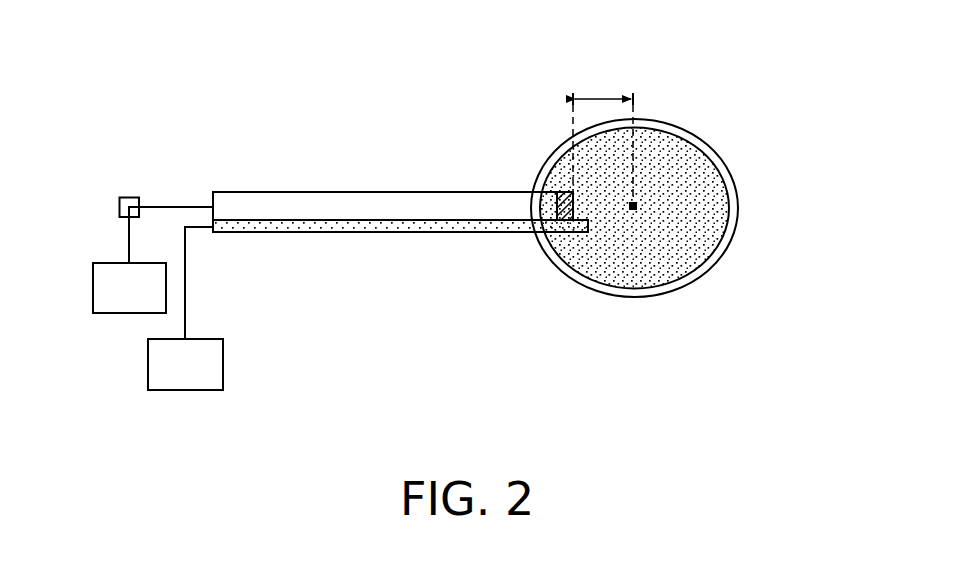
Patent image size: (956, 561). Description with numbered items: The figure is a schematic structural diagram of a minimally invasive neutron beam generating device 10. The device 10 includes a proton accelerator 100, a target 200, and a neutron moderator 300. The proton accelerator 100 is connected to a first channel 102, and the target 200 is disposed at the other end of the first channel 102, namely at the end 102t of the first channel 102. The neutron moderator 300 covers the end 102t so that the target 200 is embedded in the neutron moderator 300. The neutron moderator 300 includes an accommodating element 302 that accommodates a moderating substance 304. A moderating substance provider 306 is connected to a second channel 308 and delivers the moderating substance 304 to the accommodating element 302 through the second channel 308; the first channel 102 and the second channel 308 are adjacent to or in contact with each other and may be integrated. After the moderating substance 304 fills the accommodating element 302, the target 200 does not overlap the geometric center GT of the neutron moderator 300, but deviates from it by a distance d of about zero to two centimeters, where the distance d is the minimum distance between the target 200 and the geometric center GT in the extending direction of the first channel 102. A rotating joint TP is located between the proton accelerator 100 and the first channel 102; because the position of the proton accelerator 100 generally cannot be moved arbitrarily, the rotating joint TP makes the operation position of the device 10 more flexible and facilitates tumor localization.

The minimally invasive neutron beam generating device 10 is at (60, 29).
The rotating joint TP is at (122, 196).
The proton accelerator 100 is at (150, 302).
The first channel 102 is at (393, 203).
The end of the first channel 102t is at (548, 205).
The target 200 is at (557, 195).
The neutron moderator 300 is at (699, 206).
The accommodating element 302 is at (712, 150).
The moderating substance 304 is at (720, 177).
The moderating substance provider 306 is at (206, 378).
The second channel 308 is at (399, 223).
The geometric center of the neutron moderator GT is at (654, 192).
The distance d is at (603, 135).